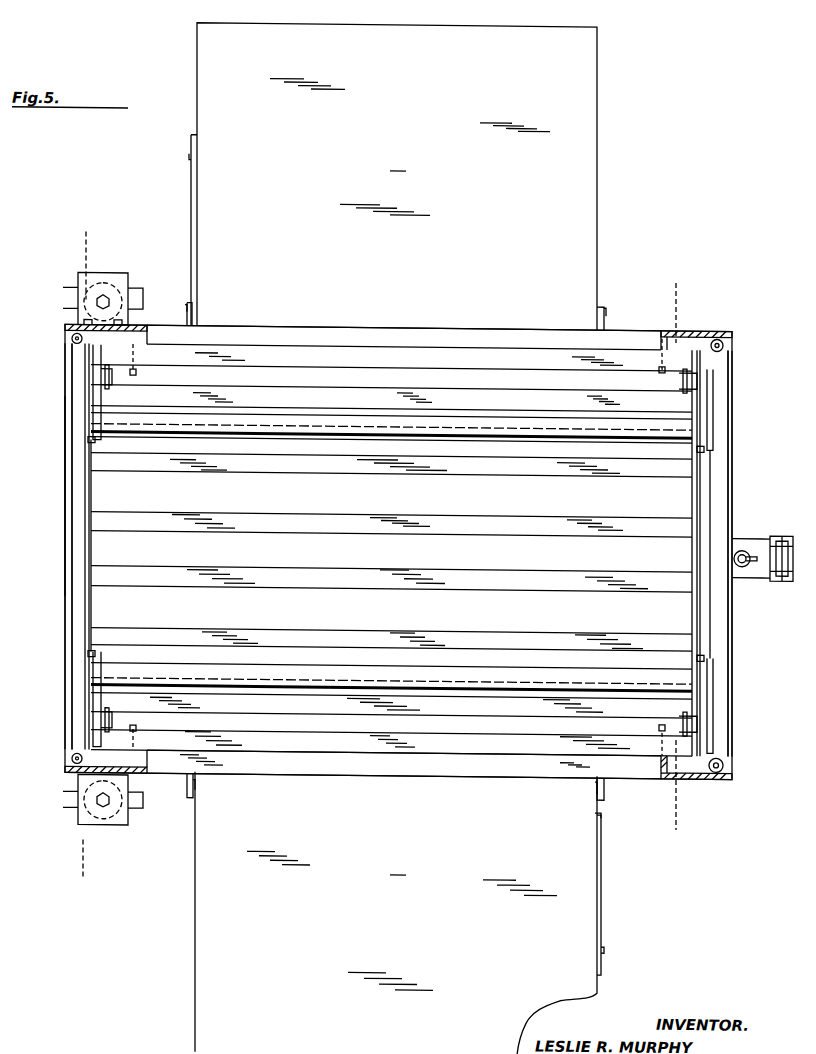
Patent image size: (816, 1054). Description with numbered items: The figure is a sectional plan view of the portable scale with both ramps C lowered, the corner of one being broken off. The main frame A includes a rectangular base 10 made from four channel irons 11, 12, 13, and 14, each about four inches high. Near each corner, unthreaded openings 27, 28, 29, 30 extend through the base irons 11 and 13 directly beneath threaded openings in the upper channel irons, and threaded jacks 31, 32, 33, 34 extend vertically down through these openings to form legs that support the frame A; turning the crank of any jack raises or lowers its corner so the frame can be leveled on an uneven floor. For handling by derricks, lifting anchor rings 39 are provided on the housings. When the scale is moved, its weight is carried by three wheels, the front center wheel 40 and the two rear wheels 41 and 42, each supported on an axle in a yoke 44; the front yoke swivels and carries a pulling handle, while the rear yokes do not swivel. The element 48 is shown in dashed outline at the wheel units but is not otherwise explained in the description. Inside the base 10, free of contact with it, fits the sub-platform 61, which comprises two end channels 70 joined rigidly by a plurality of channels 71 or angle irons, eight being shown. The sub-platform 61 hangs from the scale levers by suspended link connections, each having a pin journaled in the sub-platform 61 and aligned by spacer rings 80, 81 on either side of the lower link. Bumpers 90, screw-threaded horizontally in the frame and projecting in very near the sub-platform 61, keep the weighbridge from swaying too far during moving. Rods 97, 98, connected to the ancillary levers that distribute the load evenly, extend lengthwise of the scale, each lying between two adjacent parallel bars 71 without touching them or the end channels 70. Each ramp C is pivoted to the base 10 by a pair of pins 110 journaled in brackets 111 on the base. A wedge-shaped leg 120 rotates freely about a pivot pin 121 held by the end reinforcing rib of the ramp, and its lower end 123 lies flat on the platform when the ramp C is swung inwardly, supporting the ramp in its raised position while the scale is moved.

The rectangular base 10 is at (72, 745).
The channel iron 11 is at (732, 677).
The channel iron 12 is at (489, 760).
The channel iron 13 is at (72, 548).
The channel iron 14 is at (378, 330).
The unthreaded opening 27 is at (723, 760).
The unthreaded opening 28 is at (723, 342).
The unthreaded opening 29 is at (83, 763).
The unthreaded opening 30 is at (72, 342).
The threaded jack 31 is at (716, 776).
The threaded jack 32 is at (732, 333).
The threaded jack 33 is at (65, 775).
The threaded jack 34 is at (65, 333).
The lifting anchor ring 39 is at (742, 563).
The front wheel 40 is at (780, 577).
The rear wheel 41 is at (135, 811).
The rear wheel 42 is at (135, 291).
The yoke 44 is at (786, 532).
The motor pulley 48 is at (108, 286).
The sub-platform 61 is at (345, 740).
The end channel 70 is at (93, 503).
The channel 71 is at (512, 405).
The spacer ring 80 is at (95, 381).
The spacer ring 81 is at (105, 391).
The bumper 90 is at (136, 376).
The rod 97 is at (447, 670).
The rod 98 is at (350, 425).
The pin 110 is at (187, 323).
The bracket 111 is at (185, 308).
The leg 120 is at (195, 193).
The pivot pin 121 is at (189, 161).
The lower end 123 is at (601, 814).
The main frame A is at (62, 510).
The ramp C is at (396, 538).